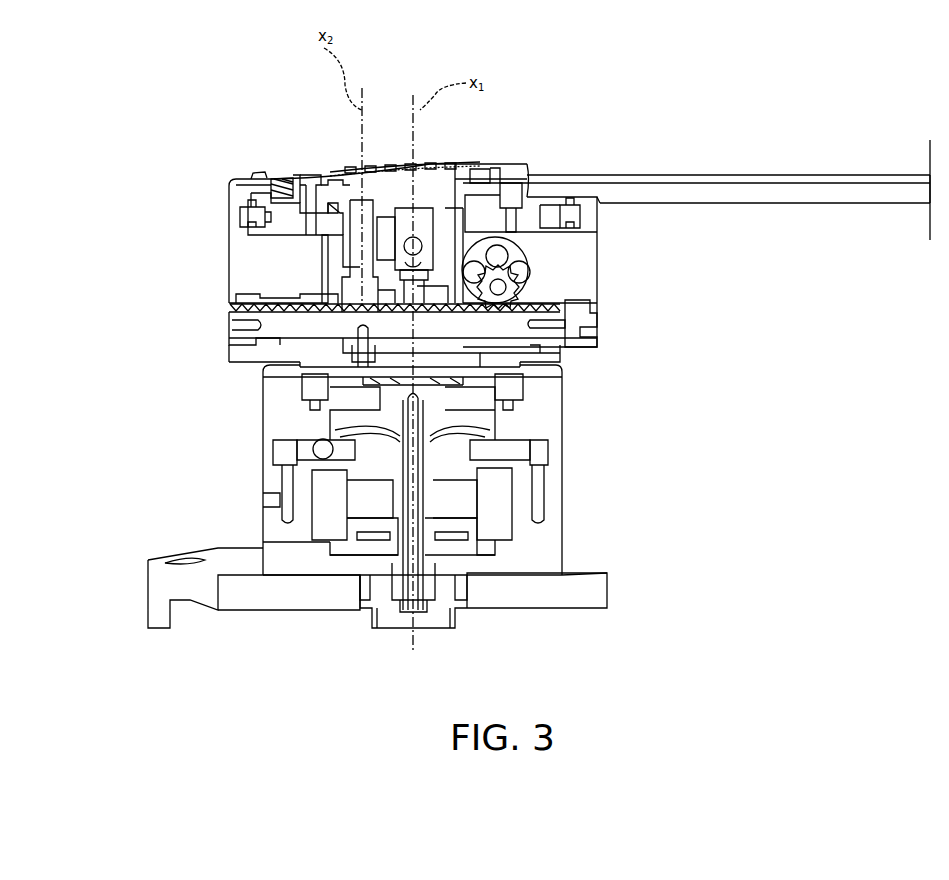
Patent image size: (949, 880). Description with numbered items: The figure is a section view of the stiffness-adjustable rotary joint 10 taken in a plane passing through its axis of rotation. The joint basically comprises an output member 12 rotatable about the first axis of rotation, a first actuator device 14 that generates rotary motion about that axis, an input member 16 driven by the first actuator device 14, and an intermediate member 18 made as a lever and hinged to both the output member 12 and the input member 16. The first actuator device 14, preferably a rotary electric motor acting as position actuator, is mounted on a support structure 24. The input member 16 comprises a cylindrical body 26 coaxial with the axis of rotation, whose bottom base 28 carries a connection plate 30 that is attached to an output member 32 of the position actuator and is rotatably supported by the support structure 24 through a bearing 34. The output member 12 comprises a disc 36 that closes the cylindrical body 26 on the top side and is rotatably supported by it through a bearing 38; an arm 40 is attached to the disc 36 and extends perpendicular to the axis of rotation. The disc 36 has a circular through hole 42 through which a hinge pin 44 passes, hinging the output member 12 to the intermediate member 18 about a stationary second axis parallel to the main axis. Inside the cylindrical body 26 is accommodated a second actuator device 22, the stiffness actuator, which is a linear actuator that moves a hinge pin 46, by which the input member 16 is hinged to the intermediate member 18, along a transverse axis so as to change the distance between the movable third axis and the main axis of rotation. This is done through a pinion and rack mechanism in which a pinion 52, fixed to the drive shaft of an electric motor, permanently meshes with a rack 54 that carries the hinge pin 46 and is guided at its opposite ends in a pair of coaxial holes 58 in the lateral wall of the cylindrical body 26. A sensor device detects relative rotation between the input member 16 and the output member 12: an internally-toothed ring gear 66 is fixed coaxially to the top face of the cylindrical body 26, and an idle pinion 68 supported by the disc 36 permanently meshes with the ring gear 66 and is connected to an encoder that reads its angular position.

The stiffness-adjustable rotary joint 10 is at (214, 357).
The output member 12 is at (561, 180).
The first actuator device 14 is at (500, 520).
The input member 16 is at (598, 292).
The intermediate member 18 is at (555, 332).
The second actuator device 22 is at (481, 243).
The support structure 24 is at (265, 540).
The cylindrical body 26 is at (228, 258).
The bottom base 28 is at (252, 362).
The connection plate 30 is at (528, 380).
The output member of the position actuator 32 is at (320, 456).
The bearing 34 is at (300, 387).
The disc 36 is at (318, 172).
The bearing 38 is at (245, 214).
The arm 40 is at (690, 175).
The circular through hole 42 is at (372, 196).
The hinge pin 44 is at (363, 158).
The hinge pin 46 is at (352, 293).
The pinion 52 is at (520, 274).
The rack 54 is at (603, 300).
The coaxial holes 58 is at (232, 305).
The internally-toothed ring gear 66 is at (266, 176).
The idle pinion 68 is at (294, 178).